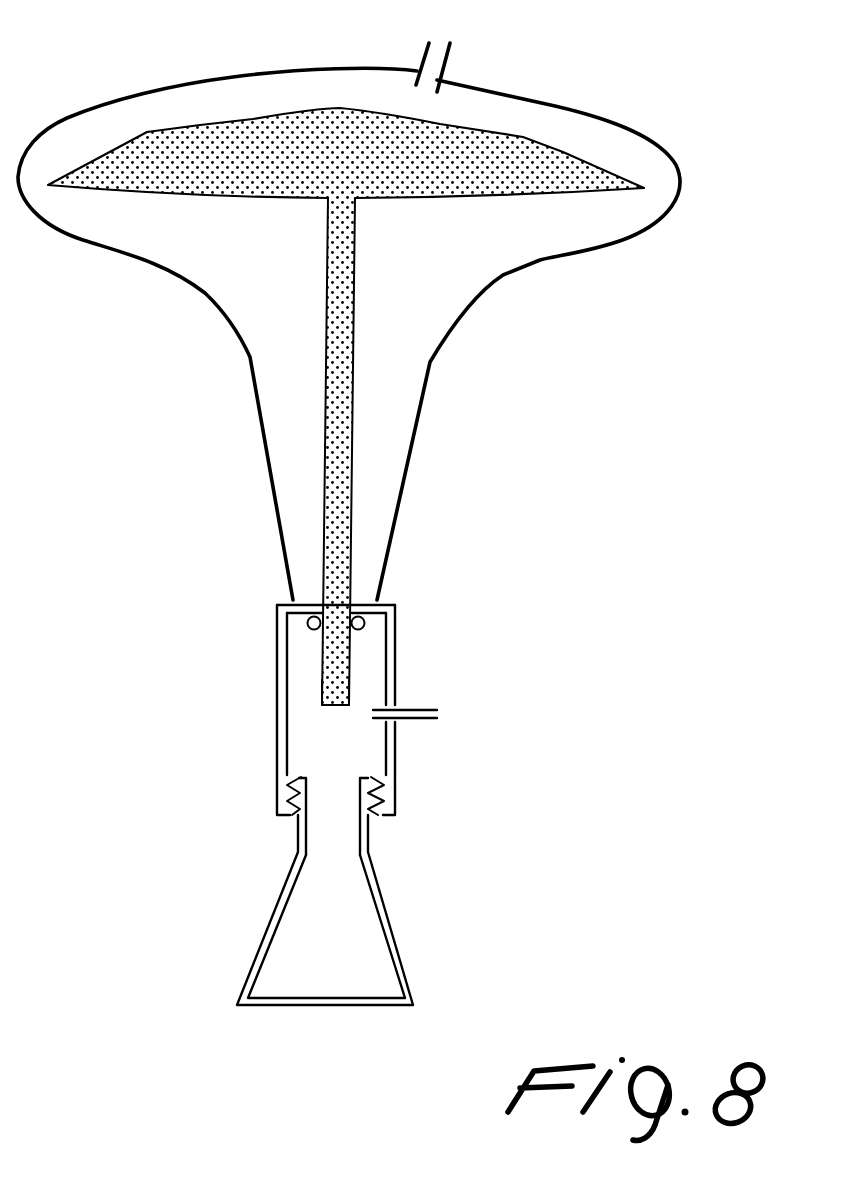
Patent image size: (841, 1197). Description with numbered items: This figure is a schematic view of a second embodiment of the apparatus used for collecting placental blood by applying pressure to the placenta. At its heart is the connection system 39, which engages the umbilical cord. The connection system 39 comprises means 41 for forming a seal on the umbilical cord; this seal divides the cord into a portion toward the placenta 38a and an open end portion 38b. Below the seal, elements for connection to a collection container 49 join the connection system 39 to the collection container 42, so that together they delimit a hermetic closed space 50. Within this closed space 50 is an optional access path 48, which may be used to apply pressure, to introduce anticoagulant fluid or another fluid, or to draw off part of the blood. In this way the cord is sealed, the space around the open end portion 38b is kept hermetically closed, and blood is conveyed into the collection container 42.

The portion of the umbilical cord toward the placenta 38a is at (332, 442).
The open end portion 38b is at (330, 672).
The connection system 39 is at (277, 609).
The means for forming a seal on the umbilical cord 41 is at (392, 616).
The access path 48 is at (440, 714).
The elements for connection to a collection container 49 is at (378, 818).
The hermetic closed space 50 is at (308, 748).
The collection container 42 is at (398, 937).